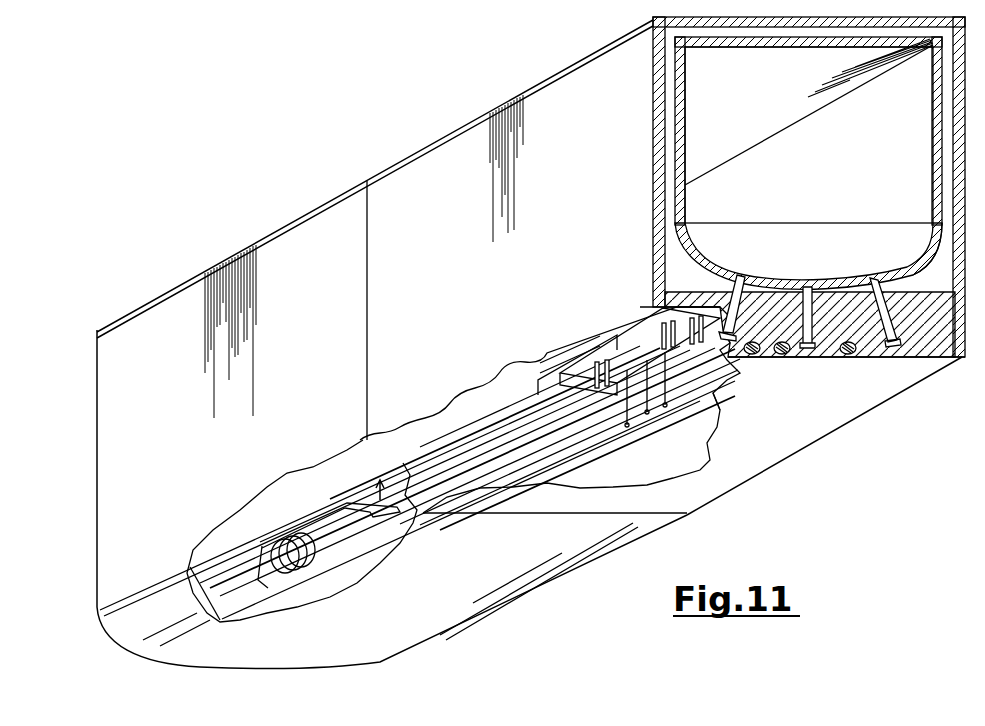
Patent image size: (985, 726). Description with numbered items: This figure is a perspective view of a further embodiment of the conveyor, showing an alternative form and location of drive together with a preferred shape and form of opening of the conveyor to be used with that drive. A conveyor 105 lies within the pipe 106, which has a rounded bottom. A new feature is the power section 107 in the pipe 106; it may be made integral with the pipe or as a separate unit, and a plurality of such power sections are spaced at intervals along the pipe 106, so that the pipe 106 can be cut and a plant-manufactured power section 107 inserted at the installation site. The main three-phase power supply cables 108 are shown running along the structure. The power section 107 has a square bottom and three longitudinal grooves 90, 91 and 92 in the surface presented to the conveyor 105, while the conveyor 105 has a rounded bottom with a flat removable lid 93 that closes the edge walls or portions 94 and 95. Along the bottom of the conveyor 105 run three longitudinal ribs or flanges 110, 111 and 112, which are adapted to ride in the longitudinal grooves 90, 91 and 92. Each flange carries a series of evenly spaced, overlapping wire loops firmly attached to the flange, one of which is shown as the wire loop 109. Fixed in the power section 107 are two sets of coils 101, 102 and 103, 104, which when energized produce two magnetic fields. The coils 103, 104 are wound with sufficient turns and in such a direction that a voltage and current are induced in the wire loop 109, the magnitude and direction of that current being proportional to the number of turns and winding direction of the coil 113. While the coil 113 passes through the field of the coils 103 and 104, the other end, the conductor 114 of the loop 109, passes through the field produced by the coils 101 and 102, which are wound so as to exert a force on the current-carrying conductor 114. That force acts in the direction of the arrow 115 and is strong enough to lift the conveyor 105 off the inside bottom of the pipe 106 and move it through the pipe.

The longitudinal groove 90 is at (740, 356).
The longitudinal groove 91 is at (810, 348).
The longitudinal groove 92 is at (897, 340).
The flat removable lid 93 is at (783, 42).
The edge wall 94 is at (683, 128).
The edge wall 95 is at (977, 240).
The coil 101 is at (725, 377).
The coil 102 is at (643, 342).
The coil 103 is at (722, 405).
The coil 104 is at (557, 390).
The conveyor 105 is at (660, 95).
The pipe 106 is at (105, 372).
The power section 107 is at (797, 444).
The main 3 phase power supply cables 108 is at (563, 470).
The wire loop 109 is at (357, 527).
The rib or flange 110 is at (730, 291).
The rib or flange 111 is at (813, 289).
The rib or flange 112 is at (884, 275).
The coil 113 is at (284, 540).
The conductor 114 is at (380, 522).
The arrow 115 is at (373, 503).